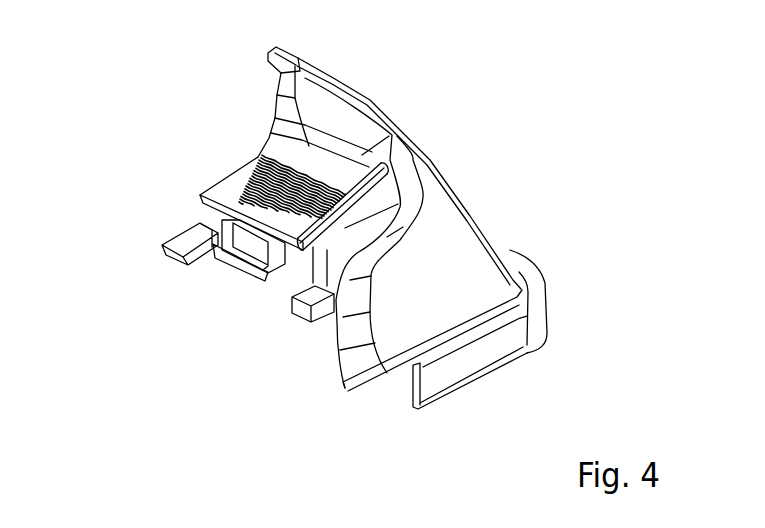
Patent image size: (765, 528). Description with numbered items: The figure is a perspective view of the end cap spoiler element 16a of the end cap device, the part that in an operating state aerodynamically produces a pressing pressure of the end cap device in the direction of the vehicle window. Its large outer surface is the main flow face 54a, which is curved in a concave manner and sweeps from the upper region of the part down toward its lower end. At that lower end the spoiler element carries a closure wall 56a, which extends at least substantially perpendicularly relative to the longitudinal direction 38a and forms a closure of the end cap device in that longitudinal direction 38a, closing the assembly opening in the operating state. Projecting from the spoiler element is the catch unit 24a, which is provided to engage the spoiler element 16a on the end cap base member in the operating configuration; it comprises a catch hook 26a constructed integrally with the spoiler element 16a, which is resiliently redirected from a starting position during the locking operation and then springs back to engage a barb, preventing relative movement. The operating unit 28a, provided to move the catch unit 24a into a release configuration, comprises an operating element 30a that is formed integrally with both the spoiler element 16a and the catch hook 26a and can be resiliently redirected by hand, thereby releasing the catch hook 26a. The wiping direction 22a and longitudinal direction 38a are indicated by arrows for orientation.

The end cap spoiler element 16a is at (438, 206).
The wiping direction 22a is at (198, 422).
The catch unit 24a is at (160, 168).
The catch hook 26a is at (235, 265).
The operating unit 28a is at (233, 144).
The operating element 30a is at (240, 181).
The longitudinal direction 38a is at (132, 322).
The main flow face 54a is at (305, 155).
The closure wall 56a is at (483, 365).